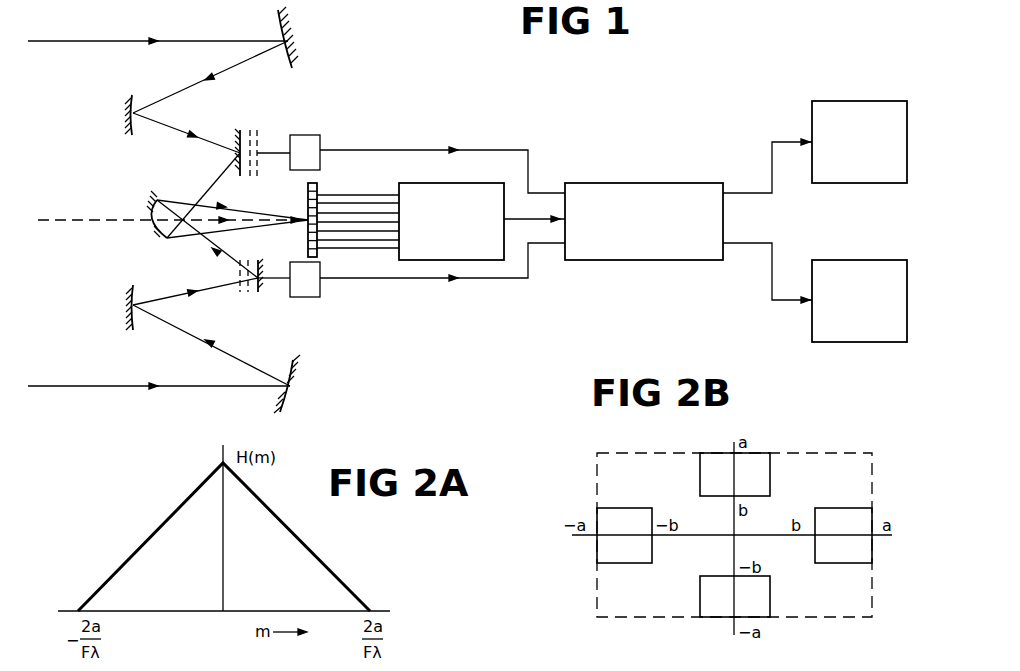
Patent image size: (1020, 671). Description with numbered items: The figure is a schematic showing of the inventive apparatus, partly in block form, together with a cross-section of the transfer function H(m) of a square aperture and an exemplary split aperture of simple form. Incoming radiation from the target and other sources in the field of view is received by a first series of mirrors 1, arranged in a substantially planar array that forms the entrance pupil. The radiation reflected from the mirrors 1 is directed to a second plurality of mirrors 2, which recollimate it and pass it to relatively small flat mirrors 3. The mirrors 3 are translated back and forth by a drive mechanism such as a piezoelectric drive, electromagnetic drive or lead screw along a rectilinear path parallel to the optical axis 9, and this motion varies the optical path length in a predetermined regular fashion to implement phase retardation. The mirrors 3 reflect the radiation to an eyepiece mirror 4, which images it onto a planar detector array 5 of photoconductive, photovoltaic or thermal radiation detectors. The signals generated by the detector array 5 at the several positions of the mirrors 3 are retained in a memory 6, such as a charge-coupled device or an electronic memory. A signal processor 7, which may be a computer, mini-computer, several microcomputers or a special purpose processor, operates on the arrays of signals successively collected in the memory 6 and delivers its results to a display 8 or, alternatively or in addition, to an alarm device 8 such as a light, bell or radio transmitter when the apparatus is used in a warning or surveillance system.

The mirrors 1 is at (298, 0).
The mirrors 2 is at (125, 106).
The flat mirrors 3 is at (256, 130).
The eyepiece mirror 4 is at (150, 215).
The detector array 5 is at (316, 184).
The memory 6 is at (430, 183).
The signal processor 7 is at (593, 183).
The display 8 is at (874, 101).
The optical axis 9 is at (59, 220).